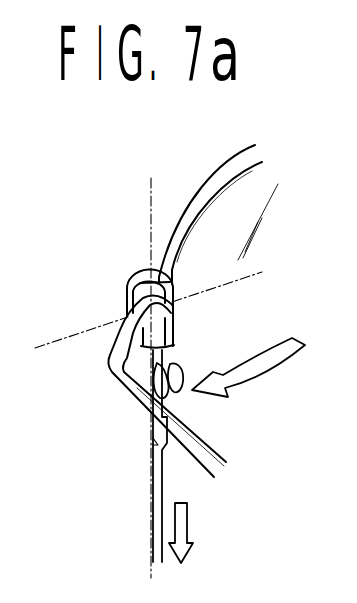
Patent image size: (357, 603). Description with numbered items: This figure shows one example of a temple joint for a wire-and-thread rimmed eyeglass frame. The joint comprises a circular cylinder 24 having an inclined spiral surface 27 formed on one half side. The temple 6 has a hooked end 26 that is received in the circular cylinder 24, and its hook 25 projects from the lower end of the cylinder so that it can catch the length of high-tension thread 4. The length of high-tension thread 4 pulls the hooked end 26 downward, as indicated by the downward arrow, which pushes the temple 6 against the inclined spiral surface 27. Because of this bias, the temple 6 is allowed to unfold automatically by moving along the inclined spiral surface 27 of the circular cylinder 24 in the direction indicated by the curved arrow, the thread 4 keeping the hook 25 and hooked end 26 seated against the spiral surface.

The length of high-tension thread 4 is at (152, 530).
The temple 6 is at (200, 450).
The circular cylinder 24 is at (132, 280).
The hook 25 is at (183, 388).
The hooked end 26 is at (157, 352).
The inclined spiral surface 27 is at (211, 285).